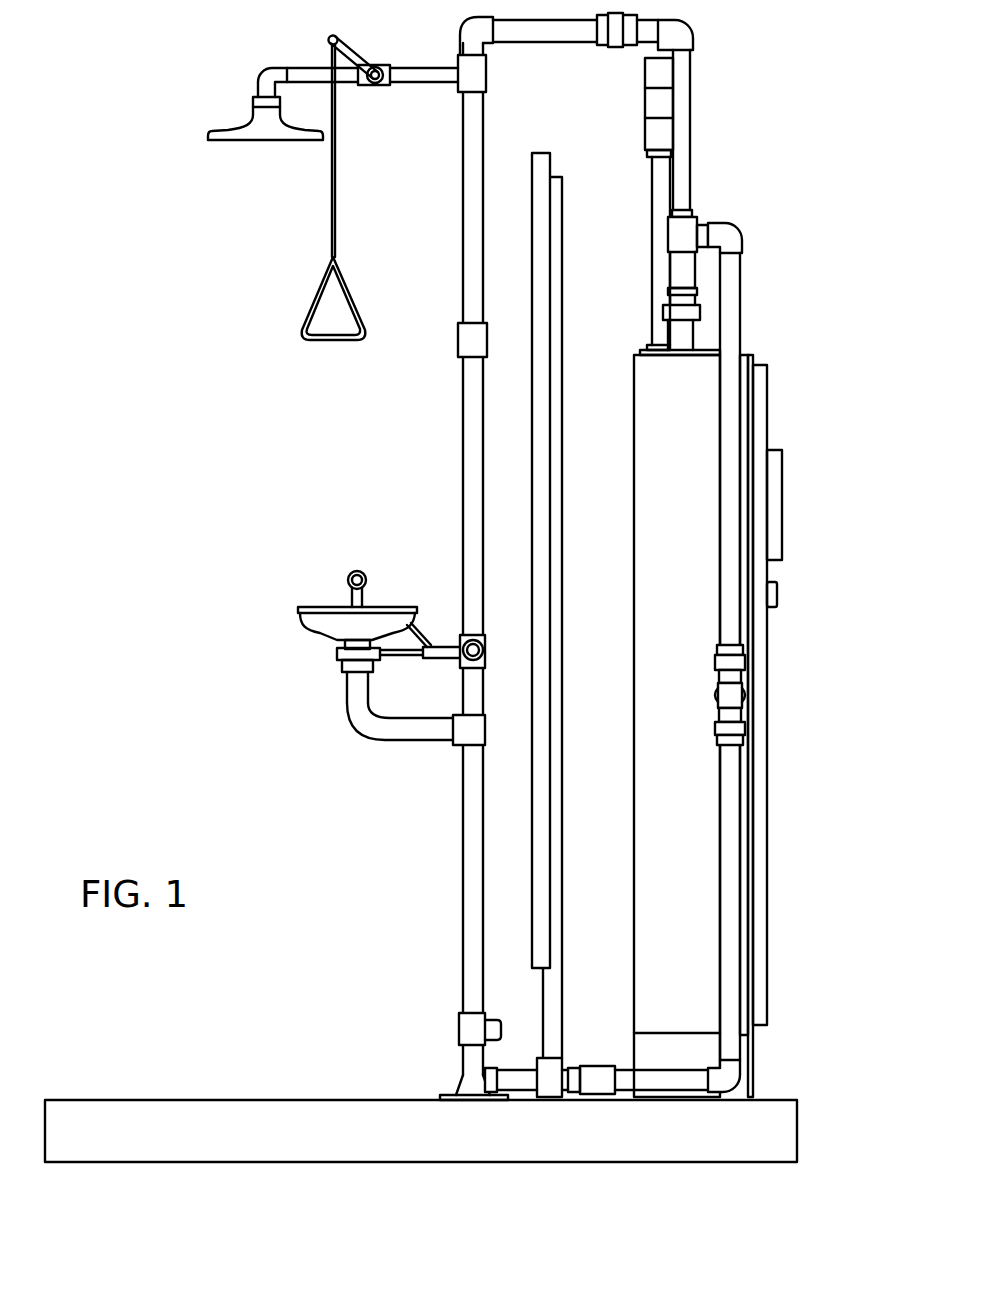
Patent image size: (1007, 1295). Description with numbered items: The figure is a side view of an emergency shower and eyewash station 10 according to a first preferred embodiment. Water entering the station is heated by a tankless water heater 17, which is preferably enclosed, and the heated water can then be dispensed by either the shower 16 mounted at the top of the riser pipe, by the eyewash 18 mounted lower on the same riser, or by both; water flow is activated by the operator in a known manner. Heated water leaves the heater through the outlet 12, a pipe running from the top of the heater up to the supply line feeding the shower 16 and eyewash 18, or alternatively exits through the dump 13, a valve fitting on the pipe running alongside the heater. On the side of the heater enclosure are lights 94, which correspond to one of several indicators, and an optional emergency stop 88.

The emergency shower and eyewash station 10 is at (222, 284).
The outlet 12 is at (690, 155).
The dump 13 is at (746, 693).
The shower 16 is at (237, 130).
The tankless water heater 17 is at (741, 355).
The eyewash 18 is at (323, 613).
The emergency stop 88 is at (777, 595).
The lights 94 is at (767, 450).